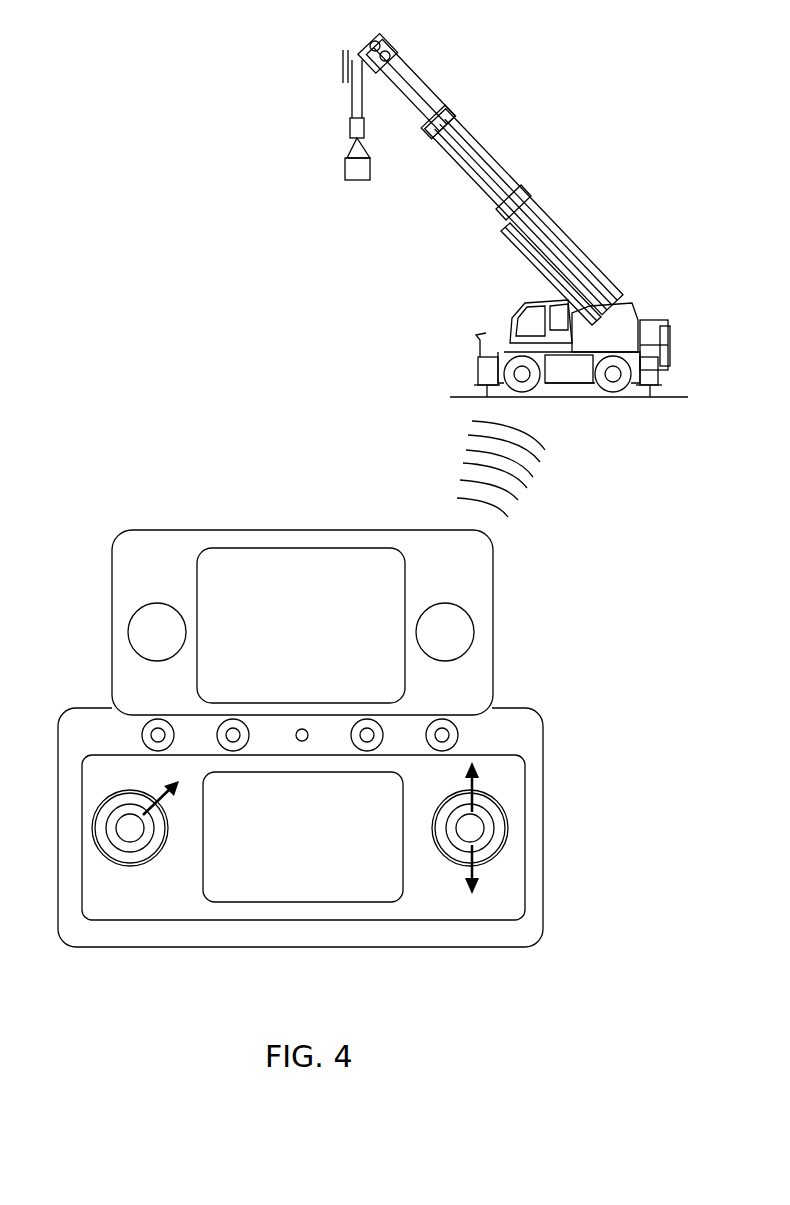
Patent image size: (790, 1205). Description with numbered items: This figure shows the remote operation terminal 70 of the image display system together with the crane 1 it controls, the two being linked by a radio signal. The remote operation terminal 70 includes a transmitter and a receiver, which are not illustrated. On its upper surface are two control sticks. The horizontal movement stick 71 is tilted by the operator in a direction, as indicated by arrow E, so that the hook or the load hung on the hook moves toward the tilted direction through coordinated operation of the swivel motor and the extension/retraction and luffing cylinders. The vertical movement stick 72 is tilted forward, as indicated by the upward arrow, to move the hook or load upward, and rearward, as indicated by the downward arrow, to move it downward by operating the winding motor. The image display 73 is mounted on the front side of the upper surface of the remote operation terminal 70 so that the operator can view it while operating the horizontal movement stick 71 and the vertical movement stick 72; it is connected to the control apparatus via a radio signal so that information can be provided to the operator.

The crane 1 is at (630, 234).
The remote operation terminal 70 is at (170, 488).
The horizontal movement stick 71 is at (113, 847).
The vertical movement stick 72 is at (480, 840).
The image display 73 is at (355, 567).